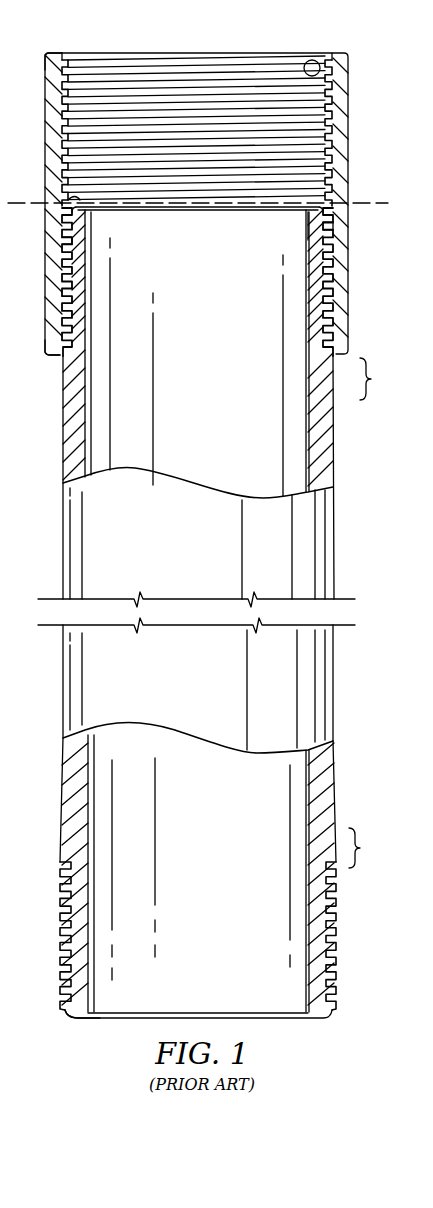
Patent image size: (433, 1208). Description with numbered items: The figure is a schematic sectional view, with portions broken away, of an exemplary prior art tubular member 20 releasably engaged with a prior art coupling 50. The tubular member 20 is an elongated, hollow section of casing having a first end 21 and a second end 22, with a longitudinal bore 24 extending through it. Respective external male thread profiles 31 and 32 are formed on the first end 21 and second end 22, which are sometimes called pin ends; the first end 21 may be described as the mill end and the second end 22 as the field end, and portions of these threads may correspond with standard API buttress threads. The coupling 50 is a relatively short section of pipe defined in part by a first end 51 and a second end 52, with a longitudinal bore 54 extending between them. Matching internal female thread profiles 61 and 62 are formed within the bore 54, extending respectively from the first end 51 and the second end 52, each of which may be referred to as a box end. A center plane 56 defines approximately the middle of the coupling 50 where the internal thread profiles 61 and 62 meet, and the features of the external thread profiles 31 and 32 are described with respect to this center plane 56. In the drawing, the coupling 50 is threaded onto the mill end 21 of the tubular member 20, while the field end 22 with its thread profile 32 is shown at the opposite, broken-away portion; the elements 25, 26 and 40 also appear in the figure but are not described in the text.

The tubular member 20 is at (336, 457).
The first end 21 is at (310, 240).
The second end 22 is at (336, 773).
The longitudinal bore 24 is at (186, 352).
The pin nose / end corner of first pipe 25 is at (67, 196).
The pin nose / end of second pipe 26 is at (84, 1020).
The first thread profile 31 is at (340, 232).
The second thread profile 32 is at (336, 948).
The thread run-out / unthreaded region 40 is at (373, 613).
The coupling 50 is at (348, 144).
The first end 51 is at (57, 357).
The second end 52 is at (52, 52).
The longitudinal bore 54 is at (185, 147).
The center plane 56 is at (375, 203).
The internal thread profile 61 is at (62, 246).
The internal thread profile 62 is at (311, 60).